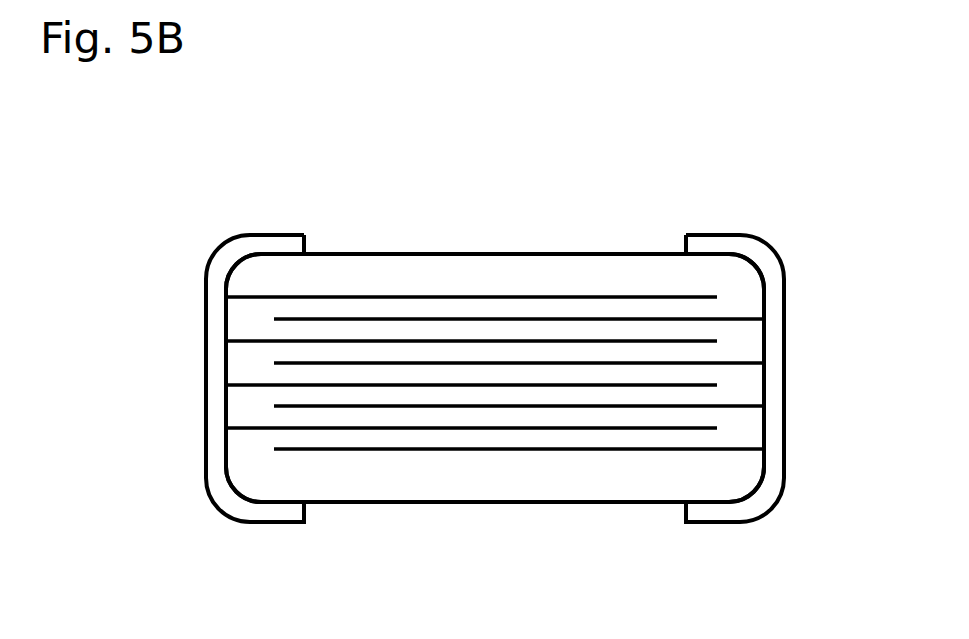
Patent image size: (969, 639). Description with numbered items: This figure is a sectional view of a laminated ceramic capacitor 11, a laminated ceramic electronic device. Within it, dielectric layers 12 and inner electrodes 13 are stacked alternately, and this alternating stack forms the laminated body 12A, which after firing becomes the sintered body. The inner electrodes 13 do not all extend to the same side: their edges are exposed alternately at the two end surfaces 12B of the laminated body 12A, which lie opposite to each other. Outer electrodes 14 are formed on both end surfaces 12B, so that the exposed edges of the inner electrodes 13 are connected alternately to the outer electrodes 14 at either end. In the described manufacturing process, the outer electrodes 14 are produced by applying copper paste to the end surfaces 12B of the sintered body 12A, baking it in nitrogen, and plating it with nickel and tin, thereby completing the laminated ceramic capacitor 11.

The laminated ceramic capacitor 11 is at (450, 225).
The dielectric layers 12 is at (496, 413).
The laminated body 12A is at (362, 483).
The end surfaces 12B is at (228, 412).
The inner electrodes 13 is at (587, 405).
The outer electrodes 14 is at (241, 248).